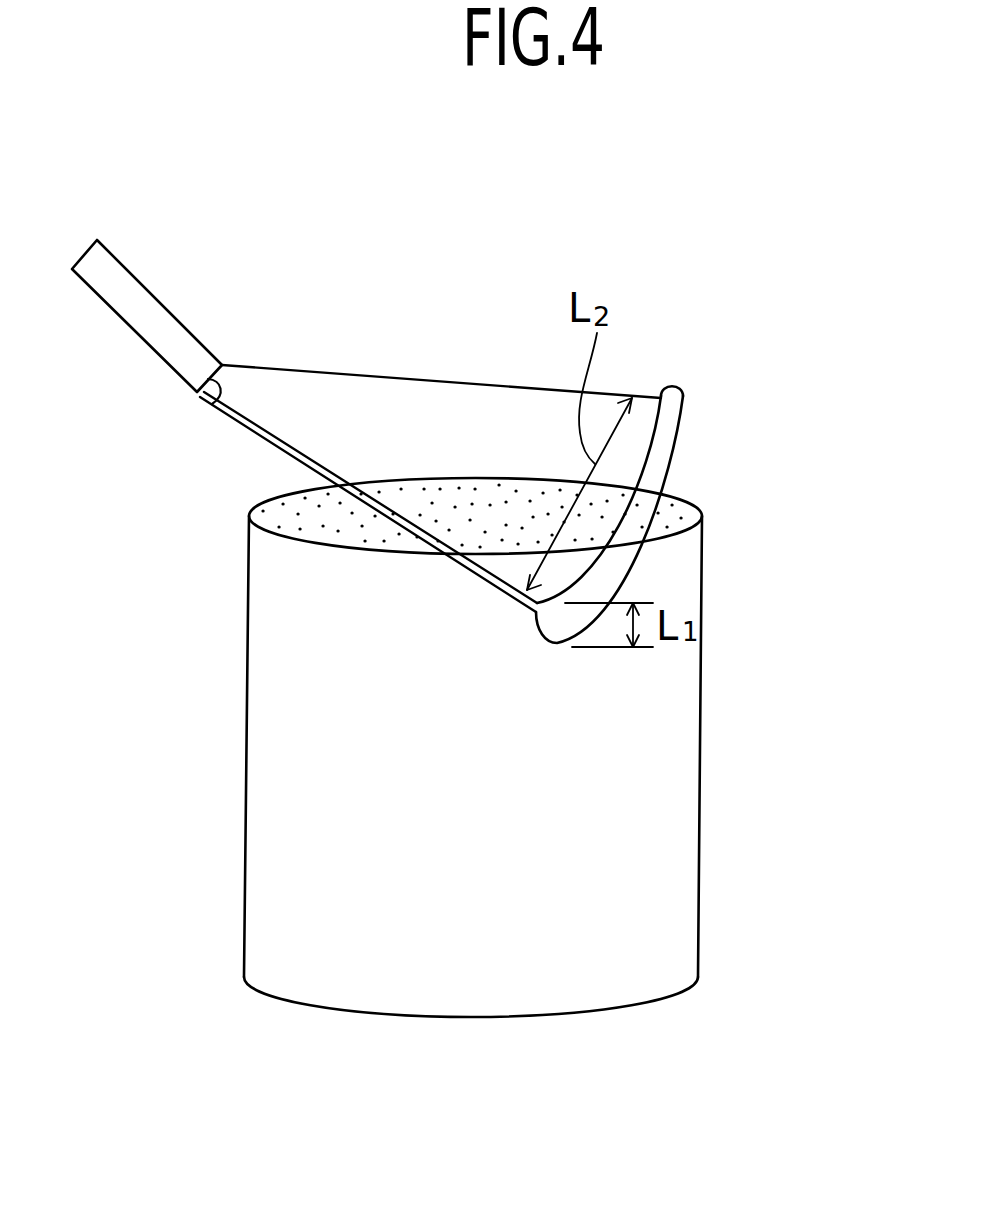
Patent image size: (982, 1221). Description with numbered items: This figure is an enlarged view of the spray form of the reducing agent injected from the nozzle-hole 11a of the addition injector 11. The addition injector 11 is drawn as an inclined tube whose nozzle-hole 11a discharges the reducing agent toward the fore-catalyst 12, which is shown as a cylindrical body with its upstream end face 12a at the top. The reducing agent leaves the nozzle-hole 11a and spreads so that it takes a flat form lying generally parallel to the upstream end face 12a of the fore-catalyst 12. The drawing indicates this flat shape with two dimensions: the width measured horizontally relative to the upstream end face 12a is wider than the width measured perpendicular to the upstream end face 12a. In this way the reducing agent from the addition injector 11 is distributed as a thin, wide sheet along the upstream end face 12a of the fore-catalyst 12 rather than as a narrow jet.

The addition injector 11 is at (142, 285).
The nozzle-hole 11a is at (212, 404).
The fore-catalyst 12 is at (700, 738).
The upstream end face 12a is at (297, 490).